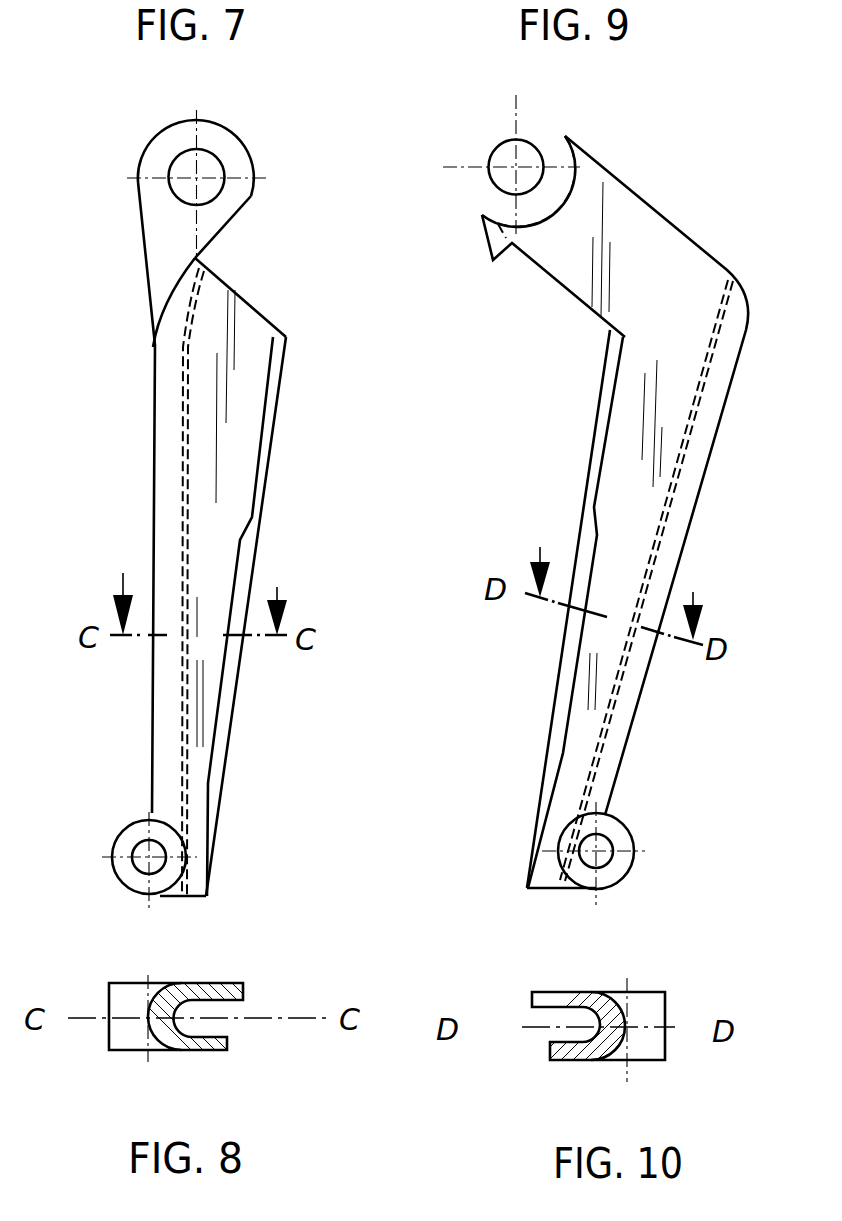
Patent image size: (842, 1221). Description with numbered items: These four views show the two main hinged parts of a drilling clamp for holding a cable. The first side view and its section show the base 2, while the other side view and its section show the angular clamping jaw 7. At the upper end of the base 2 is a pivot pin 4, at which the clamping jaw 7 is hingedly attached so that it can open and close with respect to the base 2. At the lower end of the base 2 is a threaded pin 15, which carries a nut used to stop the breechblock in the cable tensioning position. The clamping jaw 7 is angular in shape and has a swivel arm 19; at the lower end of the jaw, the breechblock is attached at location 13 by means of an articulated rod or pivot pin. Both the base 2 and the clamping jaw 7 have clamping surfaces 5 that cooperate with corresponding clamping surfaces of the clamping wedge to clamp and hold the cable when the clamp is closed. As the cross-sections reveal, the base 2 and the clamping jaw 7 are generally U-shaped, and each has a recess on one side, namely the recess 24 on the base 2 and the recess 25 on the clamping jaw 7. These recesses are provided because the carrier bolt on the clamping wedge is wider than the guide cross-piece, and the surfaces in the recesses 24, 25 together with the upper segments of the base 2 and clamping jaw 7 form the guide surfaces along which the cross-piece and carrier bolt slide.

In FIG. 7, the base 2 is at (167, 267).
In FIG. 7, the pivot pin 4 is at (183, 187).
In FIG. 9, the pivot pin 4 is at (505, 180).
In FIG. 7, the clamping surfaces 5 is at (183, 522).
In FIG. 9, the clamping surfaces 5 is at (667, 498).
In FIG. 8, the clamping surfaces 5 is at (182, 1010).
In FIG. 10, the clamping surfaces 5 is at (597, 1013).
In FIG. 9, the clamping jaw 7 is at (663, 410).
In FIG. 9, the breechblock attachment point 13 is at (602, 855).
In FIG. 7, the threaded pin 15 is at (142, 850).
In FIG. 9, the swivel arm 19 is at (642, 230).
In FIG. 7, the recess 24 is at (223, 678).
In FIG. 8, the recess 24 is at (227, 1040).
In FIG. 9, the recess 25 is at (575, 672).
In FIG. 10, the recess 25 is at (550, 1050).